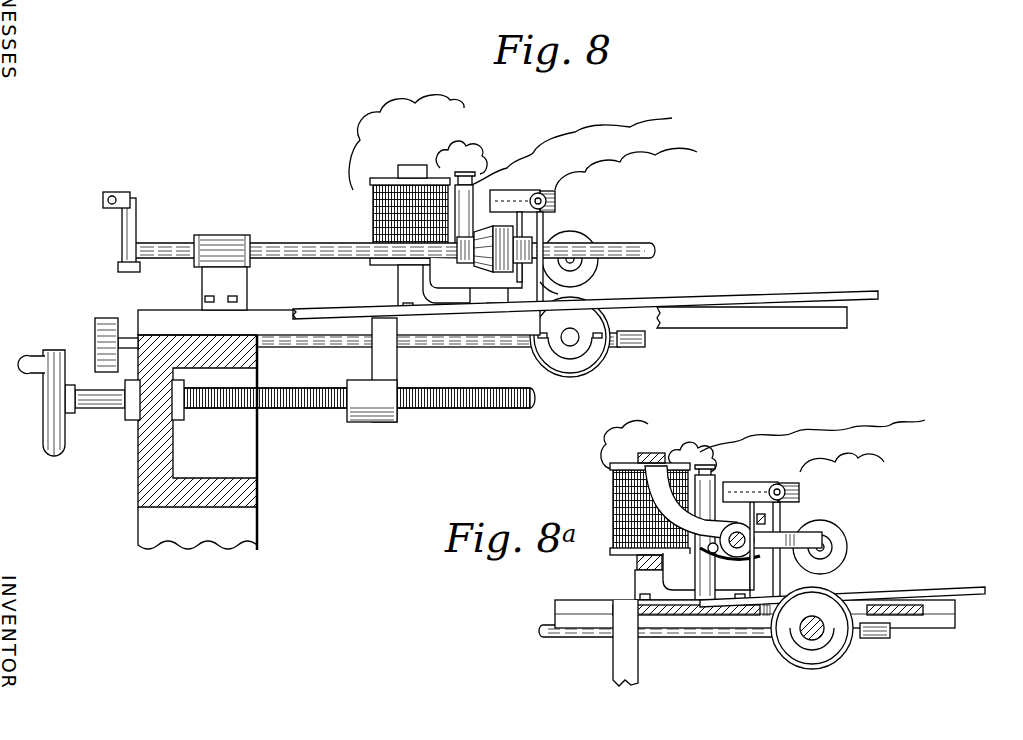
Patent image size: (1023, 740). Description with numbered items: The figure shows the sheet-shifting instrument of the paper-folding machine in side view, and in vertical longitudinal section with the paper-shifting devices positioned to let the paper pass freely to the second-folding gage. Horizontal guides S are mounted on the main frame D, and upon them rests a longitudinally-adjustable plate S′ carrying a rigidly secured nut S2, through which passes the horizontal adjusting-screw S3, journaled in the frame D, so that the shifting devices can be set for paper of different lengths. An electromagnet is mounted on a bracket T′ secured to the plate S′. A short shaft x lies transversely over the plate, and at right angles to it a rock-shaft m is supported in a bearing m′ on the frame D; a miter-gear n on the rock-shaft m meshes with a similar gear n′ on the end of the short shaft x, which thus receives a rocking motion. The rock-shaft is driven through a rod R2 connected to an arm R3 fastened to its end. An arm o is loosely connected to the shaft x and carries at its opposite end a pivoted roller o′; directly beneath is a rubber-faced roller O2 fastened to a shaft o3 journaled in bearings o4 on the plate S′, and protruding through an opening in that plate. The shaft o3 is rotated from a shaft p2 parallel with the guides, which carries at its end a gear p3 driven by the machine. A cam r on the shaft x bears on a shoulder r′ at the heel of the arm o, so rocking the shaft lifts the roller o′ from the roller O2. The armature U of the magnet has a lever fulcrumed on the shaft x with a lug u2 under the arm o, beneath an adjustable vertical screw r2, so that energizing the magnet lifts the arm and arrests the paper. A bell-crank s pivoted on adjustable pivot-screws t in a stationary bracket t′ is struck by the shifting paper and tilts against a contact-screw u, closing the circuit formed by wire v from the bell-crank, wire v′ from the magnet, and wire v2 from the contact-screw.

In FIG. 8, the arm R3 is at (103, 201).
In FIG. 8, the rod R2 is at (122, 236).
In FIG. 8, the bearing m′ is at (222, 235).
In FIG. 8, the rock-shaft m is at (328, 249).
In FIG. 8, the gear p3 is at (106, 318).
In FIG. 8, the main frame D is at (190, 462).
In FIG. 8, the adjusting-screw S3 is at (303, 410).
In FIG. 8, the nut S2 is at (366, 422).
In FIG. 8A, the nut S2 is at (625, 643).
In FIG. 8, the horizontal guides S is at (290, 306).
In FIG. 8A, the horizontal guides S is at (556, 606).
In FIG. 8, the longitudinally-adjustable plate S′ is at (372, 312).
In FIG. 8A, the longitudinally-adjustable plate S′ is at (615, 600).
In FIG. 8, the bracket T′ is at (373, 212).
In FIG. 8A, the bracket T′ is at (613, 500).
In FIG. 8, the armature U is at (412, 165).
In FIG. 8A, the armature U is at (650, 453).
In FIG. 8, the contact-screw u is at (470, 186).
In FIG. 8A, the contact-screw u is at (710, 476).
In FIG. 8, the bell-crank s is at (474, 196).
In FIG. 8A, the bell-crank s is at (780, 576).
In FIG. 8, the stationary bracket t′ is at (508, 200).
In FIG. 8A, the stationary bracket t′ is at (745, 486).
In FIG. 8, the pivot-screws t is at (540, 193).
In FIG. 8A, the pivot-screws t is at (777, 484).
In FIG. 8, the wire v′ is at (360, 138).
In FIG. 8A, the wire v′ is at (608, 444).
In FIG. 8, the wire v2 is at (569, 152).
In FIG. 8A, the wire v2 is at (812, 436).
In FIG. 8, the wire v is at (626, 169).
In FIG. 8A, the wire v is at (842, 465).
In FIG. 8, the bevel gear u′ is at (470, 232).
In FIG. 8, the miter-gear n′ is at (506, 226).
In FIG. 8, the collar i′ is at (532, 238).
In FIG. 8, the roller o′ is at (588, 235).
In FIG. 8A, the roller o′ is at (845, 540).
In FIG. 8, the miter-gear n is at (468, 272).
In FIG. 8A, the miter-gear n is at (706, 571).
In FIG. 8, the lever b is at (549, 293).
In FIG. 8, the shaft p2 is at (458, 350).
In FIG. 8A, the shaft p2 is at (700, 640).
In FIG. 8, the shaft o3 is at (570, 340).
In FIG. 8A, the shaft o3 is at (808, 624).
In FIG. 8, the rubber-faced roller O2 is at (585, 370).
In FIG. 8A, the rubber-faced roller O2 is at (825, 660).
In FIG. 8, the bearings o4 is at (630, 348).
In FIG. 8A, the bearings o4 is at (876, 640).
In FIG. 8A, the short shaft x is at (739, 530).
In FIG. 8A, the curved arm W′ is at (712, 526).
In FIG. 8A, the cam r is at (713, 541).
In FIG. 8A, the shoulder r′ is at (730, 559).
In FIG. 8A, the vertical screw r2 is at (761, 510).
In FIG. 8A, the arm o is at (779, 539).
In FIG. 8A, the lug u2 is at (754, 576).